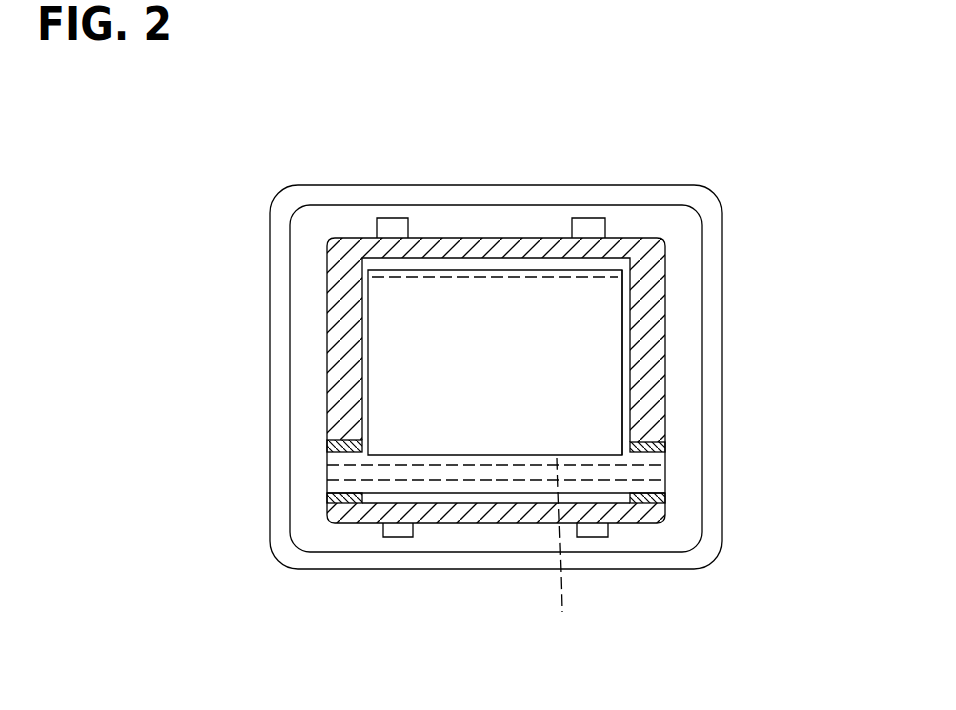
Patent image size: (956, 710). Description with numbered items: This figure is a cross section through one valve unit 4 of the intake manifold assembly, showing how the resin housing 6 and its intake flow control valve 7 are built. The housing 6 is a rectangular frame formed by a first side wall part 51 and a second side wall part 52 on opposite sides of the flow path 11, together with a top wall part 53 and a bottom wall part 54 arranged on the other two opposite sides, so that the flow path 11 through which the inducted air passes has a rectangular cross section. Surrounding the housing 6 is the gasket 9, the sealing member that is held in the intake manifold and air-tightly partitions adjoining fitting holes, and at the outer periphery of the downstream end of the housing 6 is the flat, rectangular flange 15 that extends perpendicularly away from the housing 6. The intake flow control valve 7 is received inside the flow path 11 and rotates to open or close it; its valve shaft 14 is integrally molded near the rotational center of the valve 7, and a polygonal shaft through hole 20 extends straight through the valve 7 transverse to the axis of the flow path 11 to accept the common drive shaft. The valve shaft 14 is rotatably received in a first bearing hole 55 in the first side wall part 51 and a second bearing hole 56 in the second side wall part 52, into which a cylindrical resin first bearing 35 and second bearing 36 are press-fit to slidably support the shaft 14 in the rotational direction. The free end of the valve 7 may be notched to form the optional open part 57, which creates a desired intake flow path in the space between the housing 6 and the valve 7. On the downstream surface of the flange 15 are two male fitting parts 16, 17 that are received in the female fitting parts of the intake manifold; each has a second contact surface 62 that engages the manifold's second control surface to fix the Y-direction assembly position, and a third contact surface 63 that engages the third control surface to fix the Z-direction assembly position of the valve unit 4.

The valve unit 4 is at (690, 170).
The gasket 9 is at (710, 196).
The flange 15 is at (692, 294).
The housing 6 is at (517, 389).
The top wall part 53 is at (525, 238).
The first side wall part 51 is at (328, 347).
The second side wall part 52 is at (667, 358).
The bottom wall part 54 is at (488, 524).
The intake flow control valve 7 is at (725, 362).
The flow path 11 is at (368, 316).
The open part 57 is at (481, 277).
The first bearing 35 is at (329, 445).
The second bearing 36 is at (666, 447).
The first bearing hole 55 is at (340, 459).
The second bearing hole 56 is at (658, 462).
The valve shaft 14 is at (524, 495).
The shaft through hole 20 is at (560, 552).
The male fitting part 16 is at (394, 218).
The male fitting part 17 is at (399, 537).
The second contact surface 62 is at (402, 218).
The third contact surface 63 is at (377, 221).